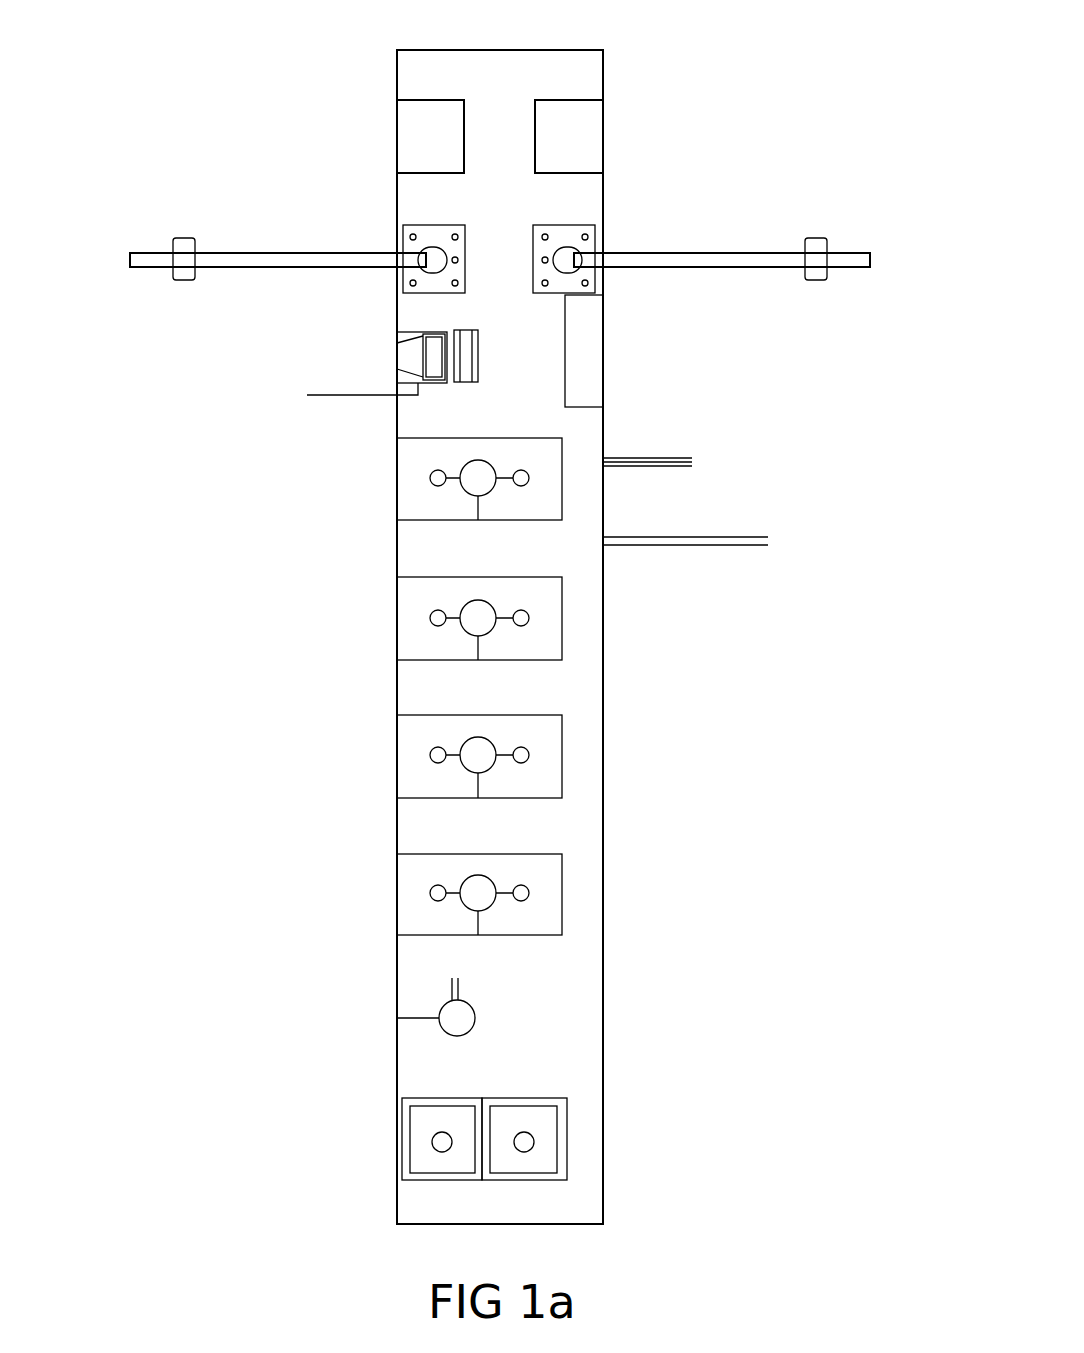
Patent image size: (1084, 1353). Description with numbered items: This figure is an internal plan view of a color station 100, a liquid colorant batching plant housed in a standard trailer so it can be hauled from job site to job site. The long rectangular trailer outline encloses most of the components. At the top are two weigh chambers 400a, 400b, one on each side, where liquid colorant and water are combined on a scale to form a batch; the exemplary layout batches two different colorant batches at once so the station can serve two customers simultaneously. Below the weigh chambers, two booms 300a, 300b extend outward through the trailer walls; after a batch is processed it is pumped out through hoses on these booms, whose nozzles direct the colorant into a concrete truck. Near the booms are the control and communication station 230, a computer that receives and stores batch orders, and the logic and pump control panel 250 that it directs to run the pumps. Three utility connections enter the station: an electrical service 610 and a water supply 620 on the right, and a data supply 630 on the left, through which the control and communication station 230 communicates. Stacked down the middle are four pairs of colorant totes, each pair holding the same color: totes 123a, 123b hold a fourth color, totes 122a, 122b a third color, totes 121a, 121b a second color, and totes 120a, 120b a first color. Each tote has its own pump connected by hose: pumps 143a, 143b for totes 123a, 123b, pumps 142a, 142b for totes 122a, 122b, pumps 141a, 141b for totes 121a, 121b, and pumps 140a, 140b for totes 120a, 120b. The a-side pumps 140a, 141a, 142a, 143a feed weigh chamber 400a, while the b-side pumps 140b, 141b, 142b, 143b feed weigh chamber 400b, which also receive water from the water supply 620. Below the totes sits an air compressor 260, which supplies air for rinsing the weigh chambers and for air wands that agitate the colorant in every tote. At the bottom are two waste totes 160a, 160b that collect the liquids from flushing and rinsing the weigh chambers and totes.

The color station 100 is at (643, 53).
The weigh chamber 400a is at (572, 143).
The weigh chamber 400b is at (418, 150).
The boom 300a is at (655, 262).
The boom 300b is at (280, 262).
The logic and pump control panel 250 is at (585, 350).
The control and communication station 230 is at (397, 348).
The data supply 630 is at (338, 396).
The tote 123a is at (555, 465).
The tote 123b is at (398, 453).
The pump 143a is at (527, 480).
The pump 143b is at (432, 484).
The electrical service 610 is at (648, 458).
The water supply 620 is at (718, 542).
The tote 122a is at (552, 648).
The tote 122b is at (412, 598).
The pump 142a is at (527, 617).
The pump 142b is at (432, 626).
The tote 121a is at (553, 752).
The tote 121b is at (405, 732).
The pump 141a is at (521, 762).
The pump 141b is at (433, 765).
The tote 120a is at (548, 878).
The tote 120b is at (412, 887).
The pump 140a is at (521, 900).
The pump 140b is at (433, 903).
The air compressor 260 is at (463, 1022).
The waste tote 160a is at (420, 1163).
The waste tote 160b is at (545, 1159).